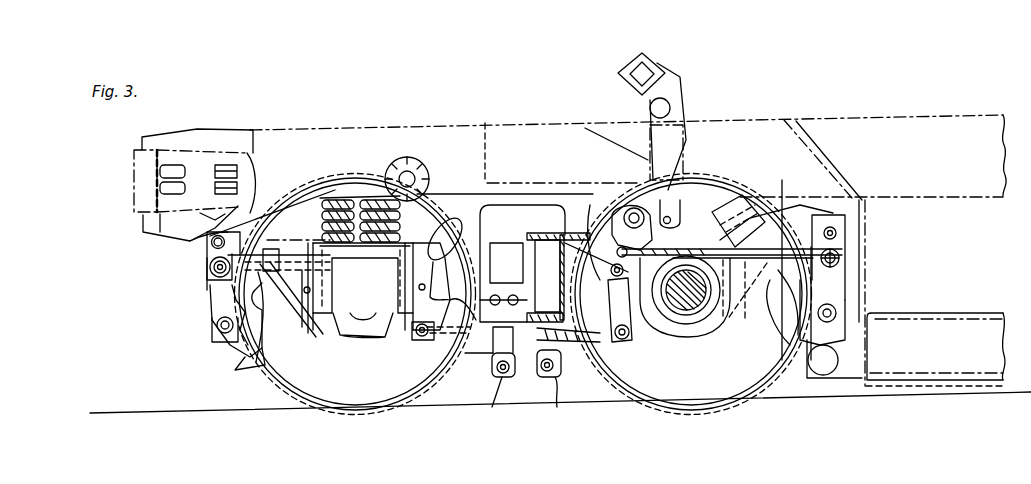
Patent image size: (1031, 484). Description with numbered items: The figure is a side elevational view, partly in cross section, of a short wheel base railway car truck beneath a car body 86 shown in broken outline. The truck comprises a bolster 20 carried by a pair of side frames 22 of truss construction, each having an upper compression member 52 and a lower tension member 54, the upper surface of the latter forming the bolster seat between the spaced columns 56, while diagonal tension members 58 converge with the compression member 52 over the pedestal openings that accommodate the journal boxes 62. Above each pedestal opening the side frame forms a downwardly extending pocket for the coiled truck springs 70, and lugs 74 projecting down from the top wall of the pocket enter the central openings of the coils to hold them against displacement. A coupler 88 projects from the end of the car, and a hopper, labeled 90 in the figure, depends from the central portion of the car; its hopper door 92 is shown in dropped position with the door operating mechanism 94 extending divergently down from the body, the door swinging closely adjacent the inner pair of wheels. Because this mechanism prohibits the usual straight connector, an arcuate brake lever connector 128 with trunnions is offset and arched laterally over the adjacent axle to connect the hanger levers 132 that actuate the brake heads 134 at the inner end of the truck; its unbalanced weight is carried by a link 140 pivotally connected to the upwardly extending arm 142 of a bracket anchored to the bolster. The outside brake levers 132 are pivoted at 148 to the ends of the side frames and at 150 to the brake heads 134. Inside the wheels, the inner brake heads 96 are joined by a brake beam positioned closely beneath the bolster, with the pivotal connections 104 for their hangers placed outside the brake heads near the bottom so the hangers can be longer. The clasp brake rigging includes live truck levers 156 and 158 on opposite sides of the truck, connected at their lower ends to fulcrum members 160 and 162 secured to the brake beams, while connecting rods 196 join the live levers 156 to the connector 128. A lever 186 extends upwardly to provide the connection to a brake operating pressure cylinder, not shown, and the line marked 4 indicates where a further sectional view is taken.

The section line 4- 4 is at (522, 437).
The bolster 20 is at (545, 232).
The side frames 22 is at (509, 180).
The upper compression member 52 is at (455, 190).
The lower tension member 54 is at (465, 378).
The spaced columns 56 is at (468, 230).
The diagonal tension members 58 is at (408, 322).
The journal boxes 62 is at (328, 298).
The coiled truck springs 70 is at (335, 195).
The lugs 74 is at (365, 196).
The car body 86 is at (862, 125).
The coupler 88 is at (214, 140).
The bolt 90 is at (850, 245).
The hopper door 92 is at (852, 380).
The door operating mechanism 94 is at (735, 180).
The inner brake heads 96 is at (490, 372).
The pivotal connections 104 is at (483, 405).
The brake lever connector 128 is at (712, 221).
The hanger levers 132 is at (211, 273).
The brake heads 134 is at (242, 360).
The link 140 is at (636, 205).
The upwardly extending arm 142 is at (592, 205).
The pivot 148 is at (212, 243).
The pivot 150 is at (216, 325).
The live truck levers 156 is at (690, 324).
The live truck levers 158 is at (440, 295).
The fulcrum members 160 is at (612, 337).
The fulcrum members 162 is at (447, 337).
The lever 186 is at (683, 77).
The connecting rods 196 is at (735, 322).